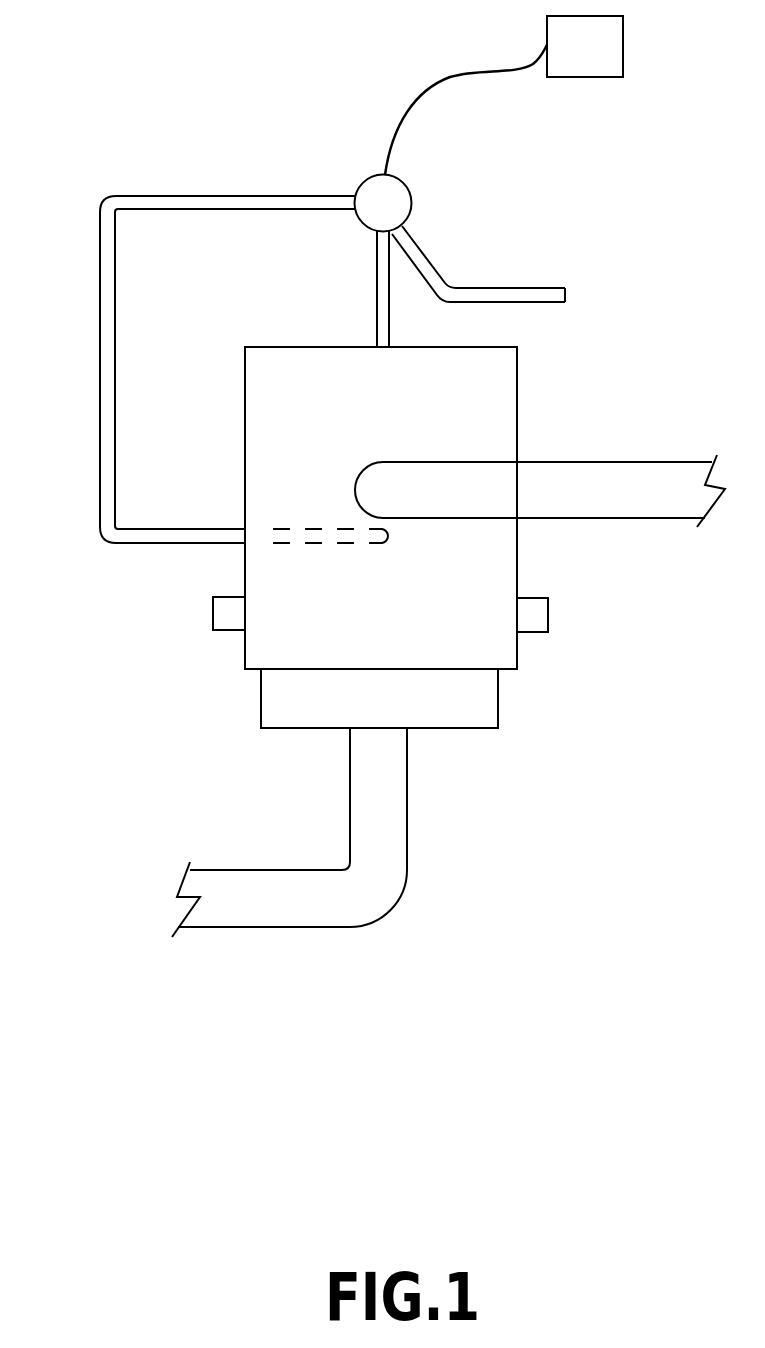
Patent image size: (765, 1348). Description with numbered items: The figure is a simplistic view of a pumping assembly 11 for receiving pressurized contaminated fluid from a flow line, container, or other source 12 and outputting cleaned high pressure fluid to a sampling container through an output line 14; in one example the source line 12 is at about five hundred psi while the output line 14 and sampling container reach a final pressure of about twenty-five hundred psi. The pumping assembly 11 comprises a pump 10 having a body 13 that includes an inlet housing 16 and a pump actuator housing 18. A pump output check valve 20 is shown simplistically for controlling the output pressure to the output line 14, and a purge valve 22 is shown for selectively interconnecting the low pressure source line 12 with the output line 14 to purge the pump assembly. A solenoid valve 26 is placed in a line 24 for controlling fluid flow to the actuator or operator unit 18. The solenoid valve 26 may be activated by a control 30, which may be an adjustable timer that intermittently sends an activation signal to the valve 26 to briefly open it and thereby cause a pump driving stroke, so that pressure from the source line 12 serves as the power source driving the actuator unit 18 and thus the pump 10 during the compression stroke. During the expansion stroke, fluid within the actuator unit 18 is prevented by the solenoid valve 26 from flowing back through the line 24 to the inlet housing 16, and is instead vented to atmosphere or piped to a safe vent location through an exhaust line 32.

The pump 10 is at (538, 752).
The pumping assembly 11 is at (118, 672).
The source line 12 is at (383, 907).
The body 13 is at (282, 701).
The output line 14 is at (663, 518).
The inlet housing 16 is at (452, 708).
The pump actuator housing 18 is at (497, 409).
The pump output check valve 20 is at (548, 615).
The purge valve 22 is at (213, 614).
The line 24 is at (100, 358).
The solenoid valve 26 is at (362, 182).
The control 30 is at (610, 43).
The exhaust line 32 is at (565, 295).